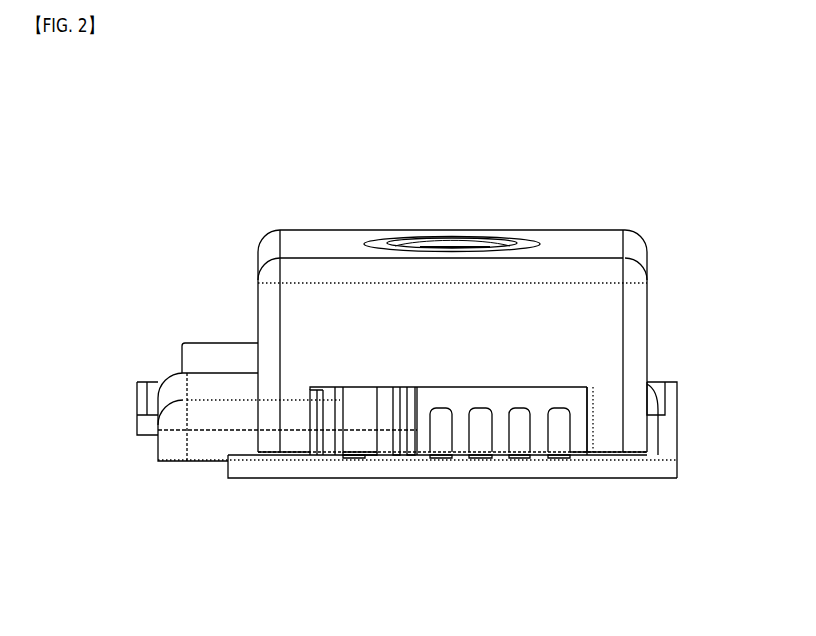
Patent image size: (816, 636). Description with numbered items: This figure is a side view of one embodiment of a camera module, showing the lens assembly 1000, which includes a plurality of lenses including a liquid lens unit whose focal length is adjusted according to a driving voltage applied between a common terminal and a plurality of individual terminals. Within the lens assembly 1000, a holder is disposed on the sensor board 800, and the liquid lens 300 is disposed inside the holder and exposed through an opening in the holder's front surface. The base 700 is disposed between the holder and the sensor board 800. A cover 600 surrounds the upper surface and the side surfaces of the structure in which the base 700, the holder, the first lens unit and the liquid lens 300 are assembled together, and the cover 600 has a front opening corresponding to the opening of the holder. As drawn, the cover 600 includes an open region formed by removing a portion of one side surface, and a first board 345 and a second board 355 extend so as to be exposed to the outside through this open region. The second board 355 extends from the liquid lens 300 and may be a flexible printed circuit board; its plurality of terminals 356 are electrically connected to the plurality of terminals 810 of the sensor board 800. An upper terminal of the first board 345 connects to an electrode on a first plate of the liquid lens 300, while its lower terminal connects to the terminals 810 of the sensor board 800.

The lens assembly 1000 is at (525, 217).
The cover 600 is at (597, 238).
The liquid lens 300 is at (441, 240).
The first board 345 is at (373, 448).
The terminals of the second board 356 is at (558, 448).
The second board 355 is at (577, 442).
The terminals of the sensor board 810 is at (358, 460).
The sensor board 800 is at (525, 470).
The base 700 is at (652, 447).